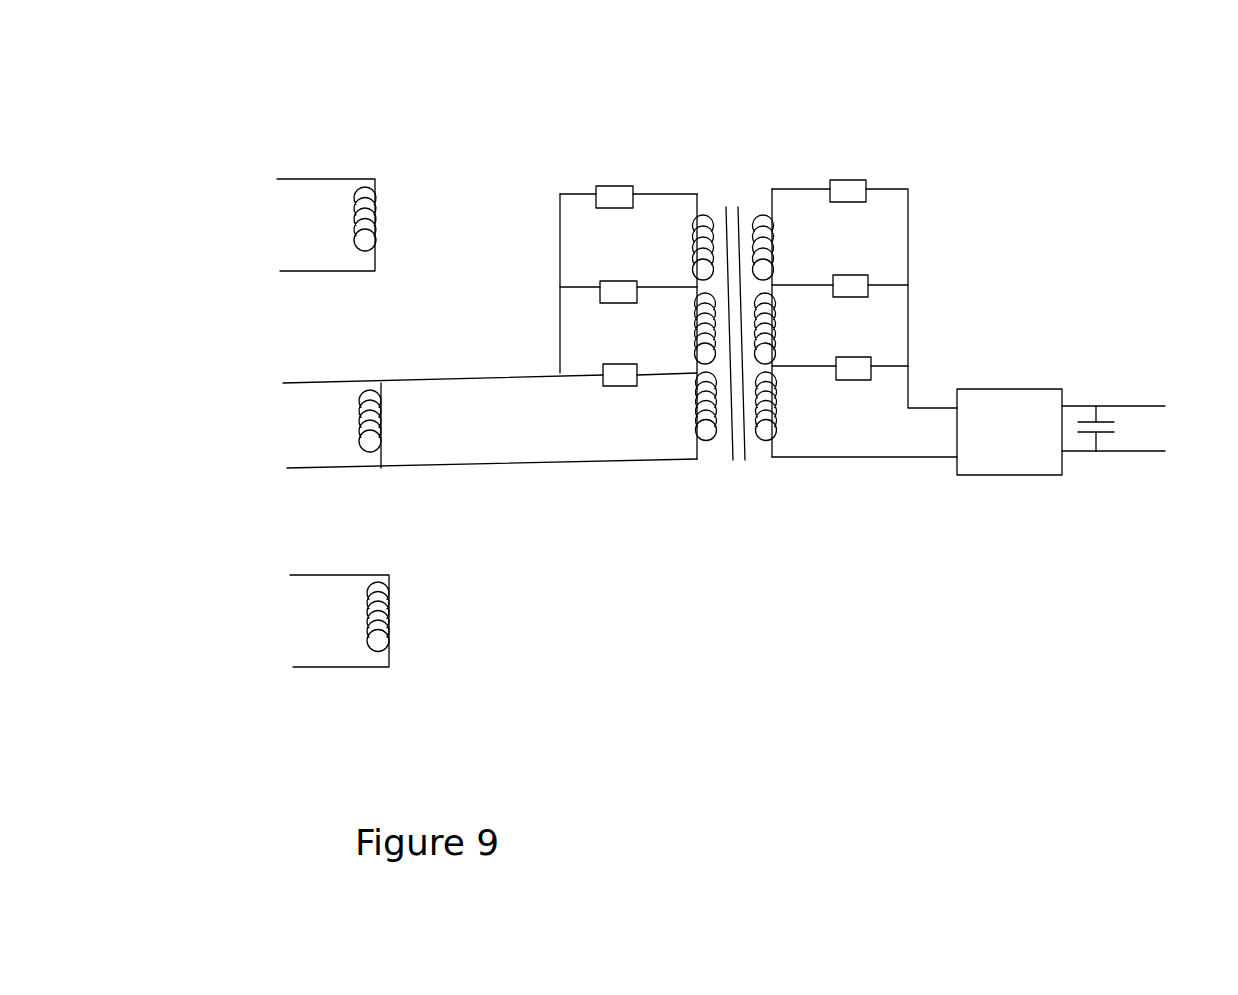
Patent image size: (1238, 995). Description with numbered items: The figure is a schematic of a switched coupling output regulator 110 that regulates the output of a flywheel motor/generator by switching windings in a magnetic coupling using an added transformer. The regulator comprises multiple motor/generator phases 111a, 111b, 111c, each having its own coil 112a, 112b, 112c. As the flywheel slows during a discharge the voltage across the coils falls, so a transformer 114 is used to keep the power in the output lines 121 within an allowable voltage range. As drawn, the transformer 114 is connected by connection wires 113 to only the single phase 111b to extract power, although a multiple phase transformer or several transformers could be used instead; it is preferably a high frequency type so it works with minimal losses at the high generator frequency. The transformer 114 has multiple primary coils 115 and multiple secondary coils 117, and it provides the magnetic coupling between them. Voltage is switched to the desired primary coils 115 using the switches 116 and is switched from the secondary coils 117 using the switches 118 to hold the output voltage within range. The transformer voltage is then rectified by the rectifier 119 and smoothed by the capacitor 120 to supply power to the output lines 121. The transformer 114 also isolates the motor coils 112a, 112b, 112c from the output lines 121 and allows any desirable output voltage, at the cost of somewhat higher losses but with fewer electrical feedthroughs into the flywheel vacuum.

The switched coupling output regulator 110 is at (516, 42).
The motor/generator phase 111a is at (268, 203).
The motor/generator phase 111b is at (290, 432).
The motor/generator phase 111c is at (313, 627).
The coil 112a is at (380, 208).
The coil 112b is at (384, 433).
The coil 112c is at (391, 613).
The connection wires 113 is at (447, 430).
The transformer 114 is at (737, 472).
The primary coils 115 is at (700, 405).
The switches 116 is at (607, 364).
The secondary coils 117 is at (773, 327).
The switches 118 is at (853, 357).
The rectifier 119 is at (1030, 478).
The capacitor 120 is at (1100, 434).
The output lines 121 is at (1168, 436).